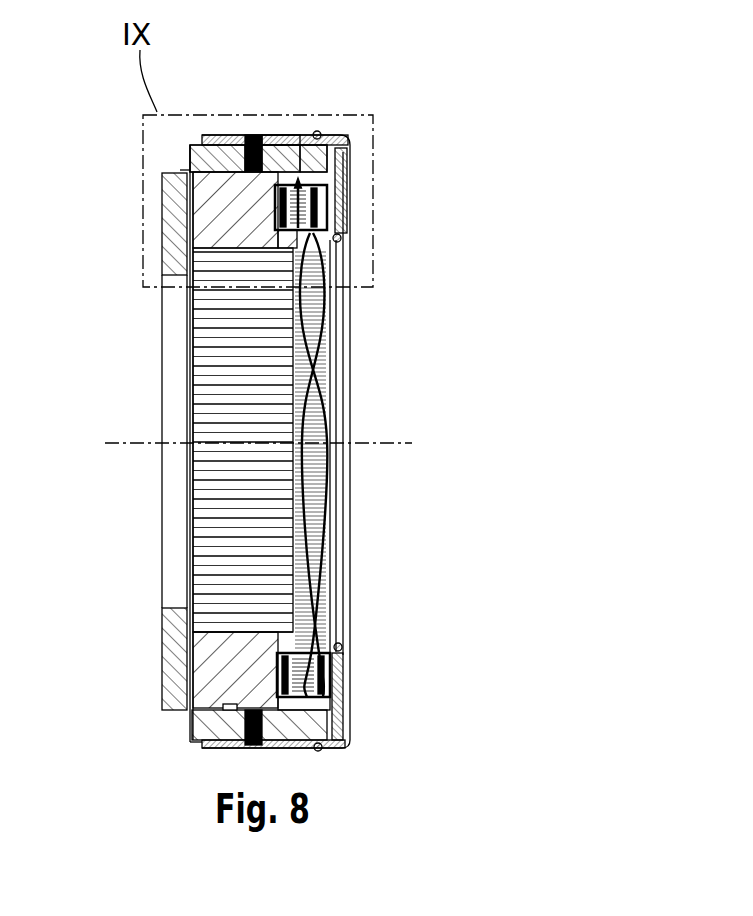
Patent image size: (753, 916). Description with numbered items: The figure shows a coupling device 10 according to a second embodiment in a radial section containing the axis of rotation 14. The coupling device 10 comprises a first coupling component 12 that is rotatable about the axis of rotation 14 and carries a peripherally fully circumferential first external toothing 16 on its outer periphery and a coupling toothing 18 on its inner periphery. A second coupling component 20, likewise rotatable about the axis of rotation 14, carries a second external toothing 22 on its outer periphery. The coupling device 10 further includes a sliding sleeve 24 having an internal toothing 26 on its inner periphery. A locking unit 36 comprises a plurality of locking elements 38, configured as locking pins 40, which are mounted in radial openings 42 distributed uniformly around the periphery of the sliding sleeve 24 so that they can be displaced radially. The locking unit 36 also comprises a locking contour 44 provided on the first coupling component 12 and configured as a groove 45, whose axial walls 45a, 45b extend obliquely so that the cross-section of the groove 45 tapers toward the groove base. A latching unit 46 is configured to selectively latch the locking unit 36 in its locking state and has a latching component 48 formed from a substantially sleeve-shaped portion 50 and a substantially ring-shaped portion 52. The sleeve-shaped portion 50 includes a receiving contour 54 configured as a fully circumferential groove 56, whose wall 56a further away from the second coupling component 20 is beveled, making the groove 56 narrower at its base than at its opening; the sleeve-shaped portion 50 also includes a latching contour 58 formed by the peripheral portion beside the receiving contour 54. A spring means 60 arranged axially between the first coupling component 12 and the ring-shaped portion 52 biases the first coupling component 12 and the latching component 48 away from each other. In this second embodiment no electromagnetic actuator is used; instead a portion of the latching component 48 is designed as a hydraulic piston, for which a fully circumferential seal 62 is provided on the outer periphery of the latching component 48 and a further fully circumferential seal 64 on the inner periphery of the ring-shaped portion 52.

The coupling device 10 is at (505, 102).
The first coupling component 12 is at (195, 670).
The axis of rotation 14 is at (393, 446).
The first external toothing 16 is at (207, 722).
The coupling toothing 18 is at (271, 566).
The second coupling component 20 is at (172, 632).
The second external toothing 22 is at (180, 173).
The sliding sleeve 24 is at (315, 725).
The internal toothing 26 is at (323, 243).
The locking unit 36 is at (427, 265).
The locking elements 38 is at (179, 137).
The locking pins 40 is at (240, 162).
The radial openings 42 is at (342, 200).
The locking contour 44 is at (163, 211).
The groove 45 is at (239, 186).
The axial wall 45a is at (163, 211).
The axial wall 45b is at (163, 236).
The latching unit 46 is at (483, 197).
The latching component 48 is at (210, 134).
The substantially sleeve-shaped portion 50 is at (228, 134).
The substantially ring-shaped portion 52 is at (312, 155).
The receiving contour 54 is at (280, 93).
The groove 56 is at (252, 124).
The wall 56a is at (268, 124).
The latching contour 58 is at (272, 157).
The spring means 60 is at (337, 373).
The seal 62 is at (322, 749).
The seal 64 is at (342, 646).